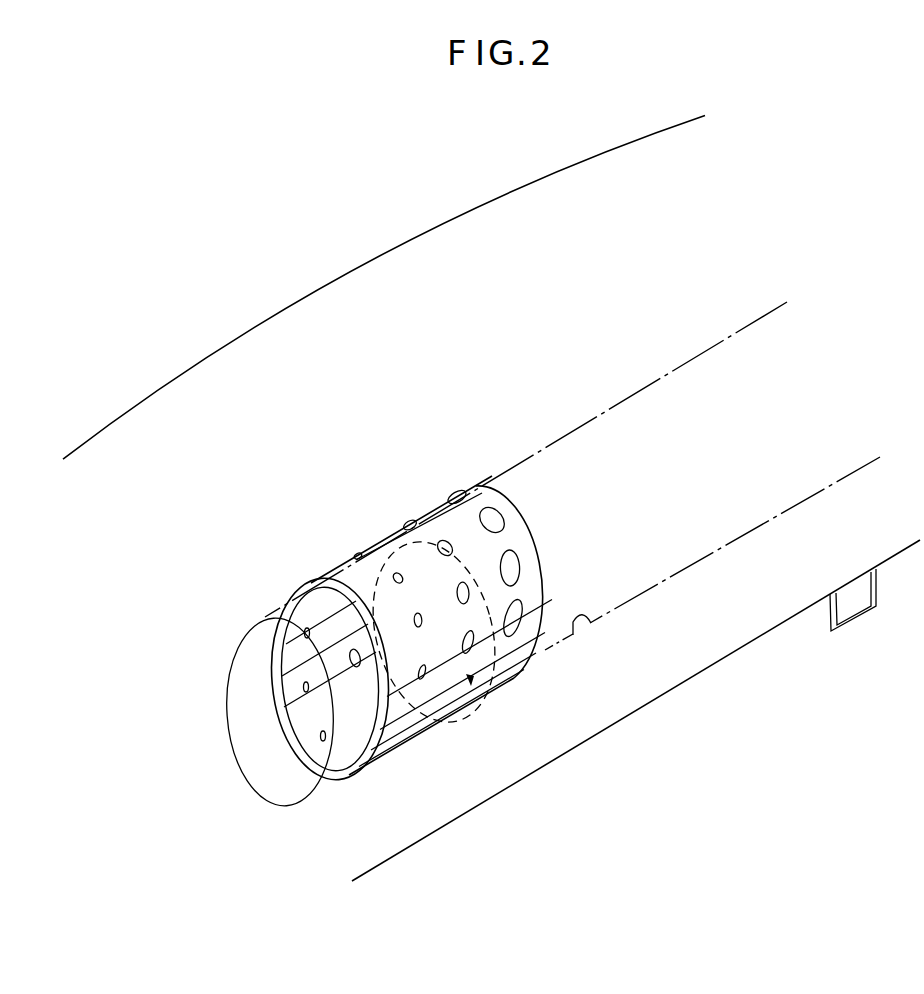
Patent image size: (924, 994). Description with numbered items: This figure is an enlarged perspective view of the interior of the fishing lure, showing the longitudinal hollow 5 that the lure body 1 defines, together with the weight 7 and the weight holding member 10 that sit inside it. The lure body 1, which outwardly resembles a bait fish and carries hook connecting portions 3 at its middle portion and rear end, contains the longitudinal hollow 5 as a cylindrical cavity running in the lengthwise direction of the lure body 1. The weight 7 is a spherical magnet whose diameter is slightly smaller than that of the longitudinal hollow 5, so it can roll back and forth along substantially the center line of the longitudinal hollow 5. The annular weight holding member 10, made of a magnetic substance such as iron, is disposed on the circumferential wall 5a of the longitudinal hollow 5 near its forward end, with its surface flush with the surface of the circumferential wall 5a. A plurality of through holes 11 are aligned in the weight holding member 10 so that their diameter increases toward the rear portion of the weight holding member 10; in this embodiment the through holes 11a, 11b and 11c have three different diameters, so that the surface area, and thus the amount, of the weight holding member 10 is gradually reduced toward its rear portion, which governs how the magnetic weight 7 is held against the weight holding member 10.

The lure body 1 is at (401, 236).
The hook connecting portions 3 is at (858, 620).
The longitudinal hollow 5 is at (661, 591).
The circumferential wall 5a is at (591, 630).
The weight 7 is at (483, 710).
The weight holding member 10 is at (434, 742).
The through holes 11 is at (508, 356).
The through holes of first diameter 11a is at (397, 574).
The through holes of second diameter 11b is at (417, 616).
The through holes of third diameter 11c is at (512, 560).